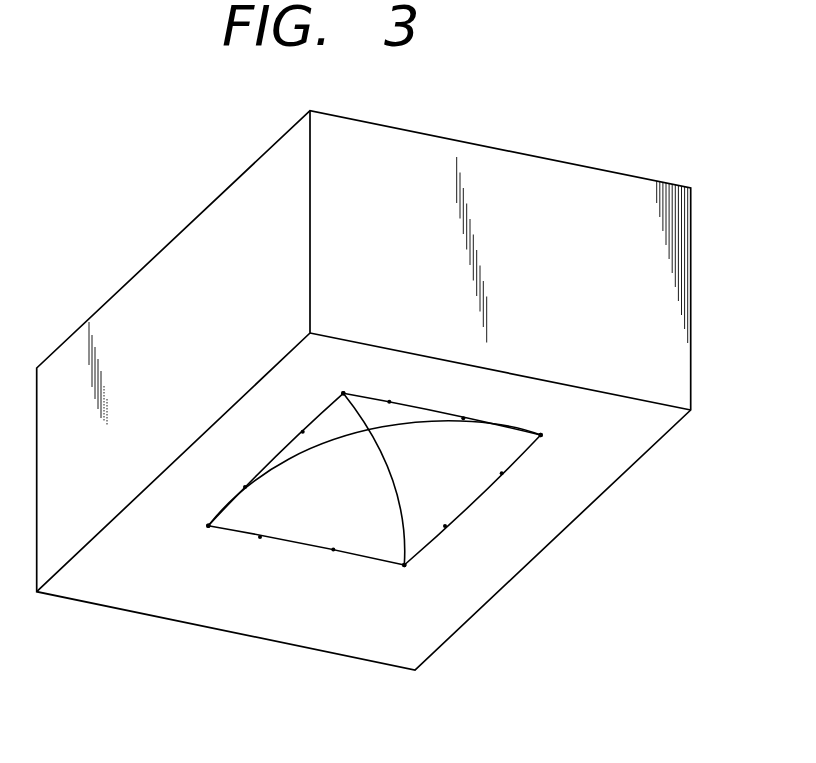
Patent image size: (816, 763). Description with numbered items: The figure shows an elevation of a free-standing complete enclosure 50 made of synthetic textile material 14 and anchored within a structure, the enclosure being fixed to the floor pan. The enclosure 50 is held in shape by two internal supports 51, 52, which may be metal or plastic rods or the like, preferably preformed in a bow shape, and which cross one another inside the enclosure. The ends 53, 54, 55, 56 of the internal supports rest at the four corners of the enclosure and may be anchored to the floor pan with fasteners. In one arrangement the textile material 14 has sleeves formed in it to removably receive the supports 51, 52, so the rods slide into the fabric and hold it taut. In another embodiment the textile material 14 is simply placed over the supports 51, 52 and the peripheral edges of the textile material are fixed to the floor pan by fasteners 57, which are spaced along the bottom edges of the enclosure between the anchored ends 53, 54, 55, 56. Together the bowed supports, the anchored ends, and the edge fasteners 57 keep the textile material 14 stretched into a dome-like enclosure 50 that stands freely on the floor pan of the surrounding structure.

The textile material 14 is at (317, 467).
The complete enclosure 50 is at (224, 581).
The internal support 51 is at (393, 475).
The internal support 52 is at (365, 398).
The end of internal support 53 is at (342, 391).
The end of internal support 54 is at (203, 526).
The end of internal support 55 is at (408, 568).
The end of internal support 56 is at (543, 432).
The fasteners 57 is at (335, 553).